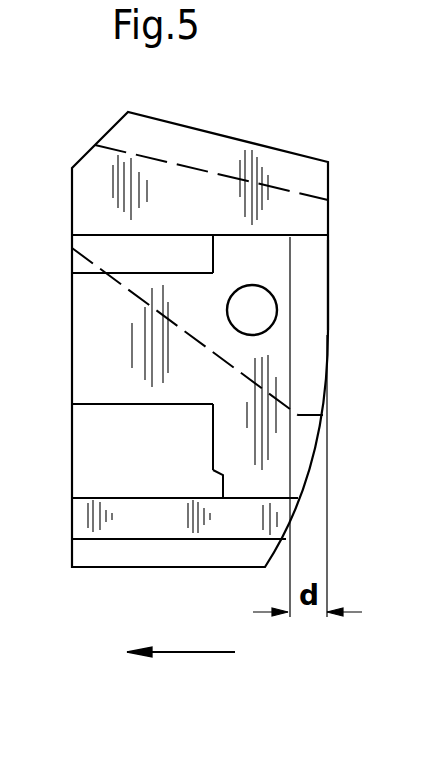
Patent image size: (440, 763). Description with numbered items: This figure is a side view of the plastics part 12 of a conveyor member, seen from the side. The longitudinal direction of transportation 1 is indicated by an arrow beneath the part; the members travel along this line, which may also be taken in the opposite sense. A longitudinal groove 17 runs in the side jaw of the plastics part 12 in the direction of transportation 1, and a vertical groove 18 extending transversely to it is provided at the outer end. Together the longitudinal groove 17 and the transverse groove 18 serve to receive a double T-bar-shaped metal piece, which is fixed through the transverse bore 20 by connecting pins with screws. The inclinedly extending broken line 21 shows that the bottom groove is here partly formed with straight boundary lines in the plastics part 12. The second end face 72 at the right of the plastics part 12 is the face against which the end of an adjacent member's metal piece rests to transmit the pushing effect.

The longitudinal direction of transportation 1 is at (183, 652).
The plastics part 12 is at (95, 175).
The longitudinal groove 17 is at (105, 358).
The vertical groove 18 is at (223, 498).
The transverse bore 20 is at (265, 300).
The inclinedly extending broken line 21 is at (123, 285).
The second end face 72 is at (341, 342).